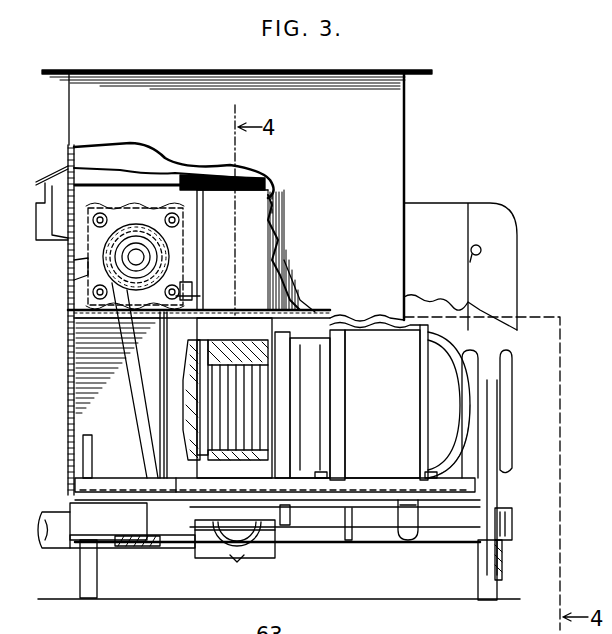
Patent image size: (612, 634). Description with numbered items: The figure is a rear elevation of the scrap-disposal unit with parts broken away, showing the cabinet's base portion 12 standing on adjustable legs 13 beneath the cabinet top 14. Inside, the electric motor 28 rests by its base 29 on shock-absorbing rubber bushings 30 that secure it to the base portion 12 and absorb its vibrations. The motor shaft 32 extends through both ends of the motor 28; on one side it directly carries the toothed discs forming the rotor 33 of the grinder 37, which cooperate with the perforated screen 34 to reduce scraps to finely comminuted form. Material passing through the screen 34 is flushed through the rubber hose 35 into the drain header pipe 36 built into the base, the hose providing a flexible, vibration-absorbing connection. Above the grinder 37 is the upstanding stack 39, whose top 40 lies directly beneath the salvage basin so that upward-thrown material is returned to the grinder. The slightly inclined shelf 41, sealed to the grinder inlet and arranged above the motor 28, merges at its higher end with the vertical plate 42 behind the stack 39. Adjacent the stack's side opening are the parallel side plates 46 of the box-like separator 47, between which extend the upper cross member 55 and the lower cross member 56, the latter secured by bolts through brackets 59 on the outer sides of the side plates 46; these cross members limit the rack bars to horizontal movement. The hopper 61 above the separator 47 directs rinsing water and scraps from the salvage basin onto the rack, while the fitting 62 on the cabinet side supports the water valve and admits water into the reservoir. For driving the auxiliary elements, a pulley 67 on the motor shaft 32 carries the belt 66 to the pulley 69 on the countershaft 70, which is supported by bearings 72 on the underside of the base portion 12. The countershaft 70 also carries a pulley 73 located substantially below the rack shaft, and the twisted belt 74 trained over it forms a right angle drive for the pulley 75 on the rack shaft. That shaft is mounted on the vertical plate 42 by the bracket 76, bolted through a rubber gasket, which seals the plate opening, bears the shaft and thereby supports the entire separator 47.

The base portion 12 is at (116, 525).
The adjustable legs 13 is at (78, 590).
The top of the cabinet 14 is at (50, 70).
The electric motor 28 is at (372, 402).
The motor base 29 is at (305, 490).
The rubber bushings 30 is at (107, 495).
The motor shaft 32 is at (185, 400).
The rotor 33 is at (262, 402).
The perforated screen 34 is at (232, 455).
The rubber hose 35 is at (247, 563).
The drain header pipe 36 is at (195, 556).
The grinder 37 is at (234, 398).
The stack 39 is at (172, 258).
The top of the stack 40 is at (272, 197).
The inclined shelf 41 is at (300, 308).
The vertical plate 42 is at (125, 210).
The side plates 46 is at (108, 215).
The separator 47 is at (190, 237).
The cross member 55 is at (66, 242).
The lower cross member 56 is at (192, 291).
The brackets 59 is at (186, 325).
The hopper 61 is at (93, 178).
The fitting 62 is at (36, 224).
The belt 66 is at (500, 456).
The pulley 67 is at (510, 392).
The pulley 69 is at (502, 548).
The countershaft 70 is at (512, 528).
The bearings 72 is at (181, 480).
The pulley 73 is at (138, 556).
The belt 74 is at (136, 392).
The pulley 75 is at (166, 264).
The bracket 76 is at (70, 279).